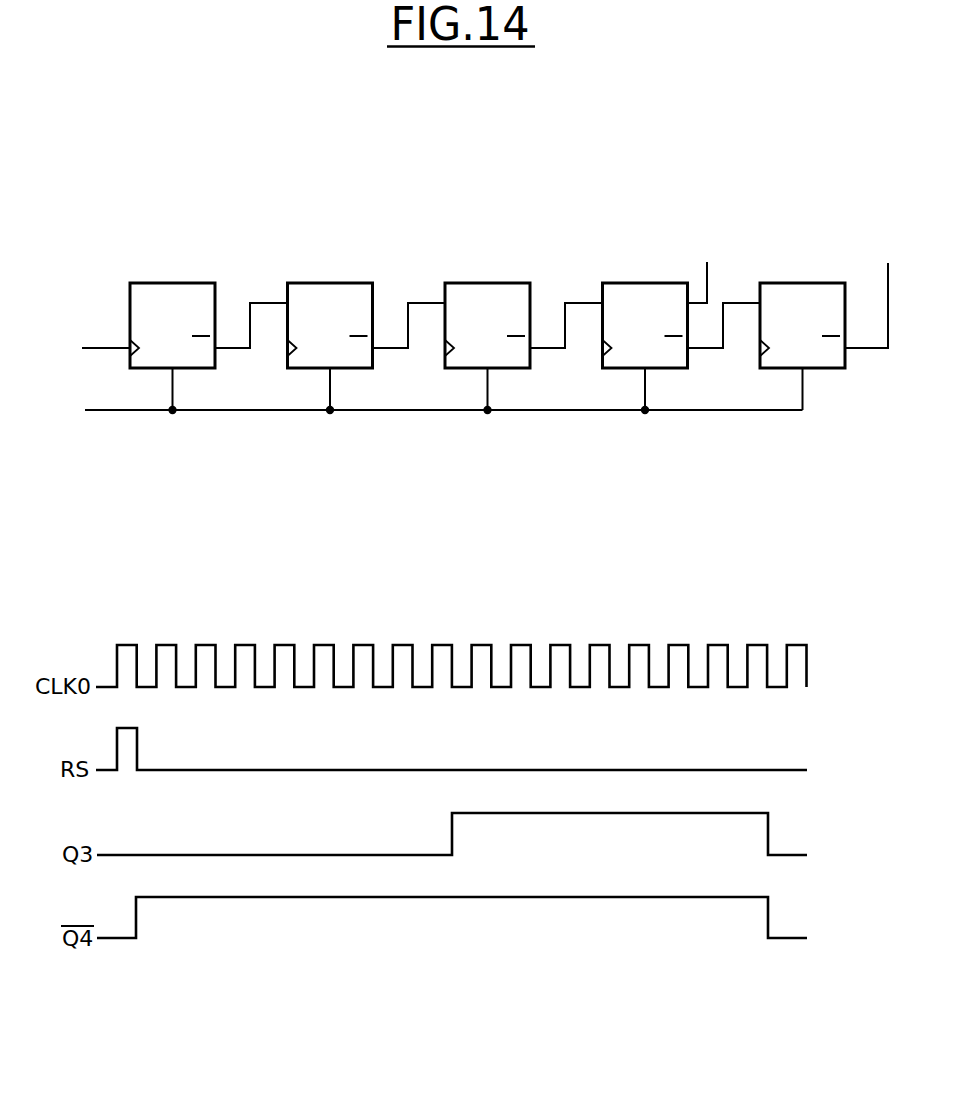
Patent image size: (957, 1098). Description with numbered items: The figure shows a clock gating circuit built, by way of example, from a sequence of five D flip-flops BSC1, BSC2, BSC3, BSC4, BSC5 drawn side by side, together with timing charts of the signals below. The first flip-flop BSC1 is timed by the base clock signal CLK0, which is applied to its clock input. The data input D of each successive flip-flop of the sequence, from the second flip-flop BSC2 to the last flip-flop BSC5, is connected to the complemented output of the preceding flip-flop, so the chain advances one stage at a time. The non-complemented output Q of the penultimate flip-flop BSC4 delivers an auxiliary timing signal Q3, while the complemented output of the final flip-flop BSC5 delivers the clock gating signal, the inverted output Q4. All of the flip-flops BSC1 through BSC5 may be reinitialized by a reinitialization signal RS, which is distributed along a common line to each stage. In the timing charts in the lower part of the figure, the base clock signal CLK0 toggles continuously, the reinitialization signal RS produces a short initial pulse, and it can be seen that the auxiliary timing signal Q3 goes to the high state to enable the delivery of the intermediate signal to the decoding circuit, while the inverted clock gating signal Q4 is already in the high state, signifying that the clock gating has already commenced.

The D flip-flop BSC1 is at (172, 283).
The D flip-flop BSC2 is at (329, 283).
The D flip-flop BSC3 is at (486, 283).
The penultimate flip-flop BSC4 is at (643, 283).
The final flip-flop BSC5 is at (801, 283).
The base clock signal CLK0 is at (75, 347).
The reinitialization signal RS is at (424, 409).
The auxiliary timing signal Q3 is at (706, 269).
The clock gating signal Q4 is at (901, 235).